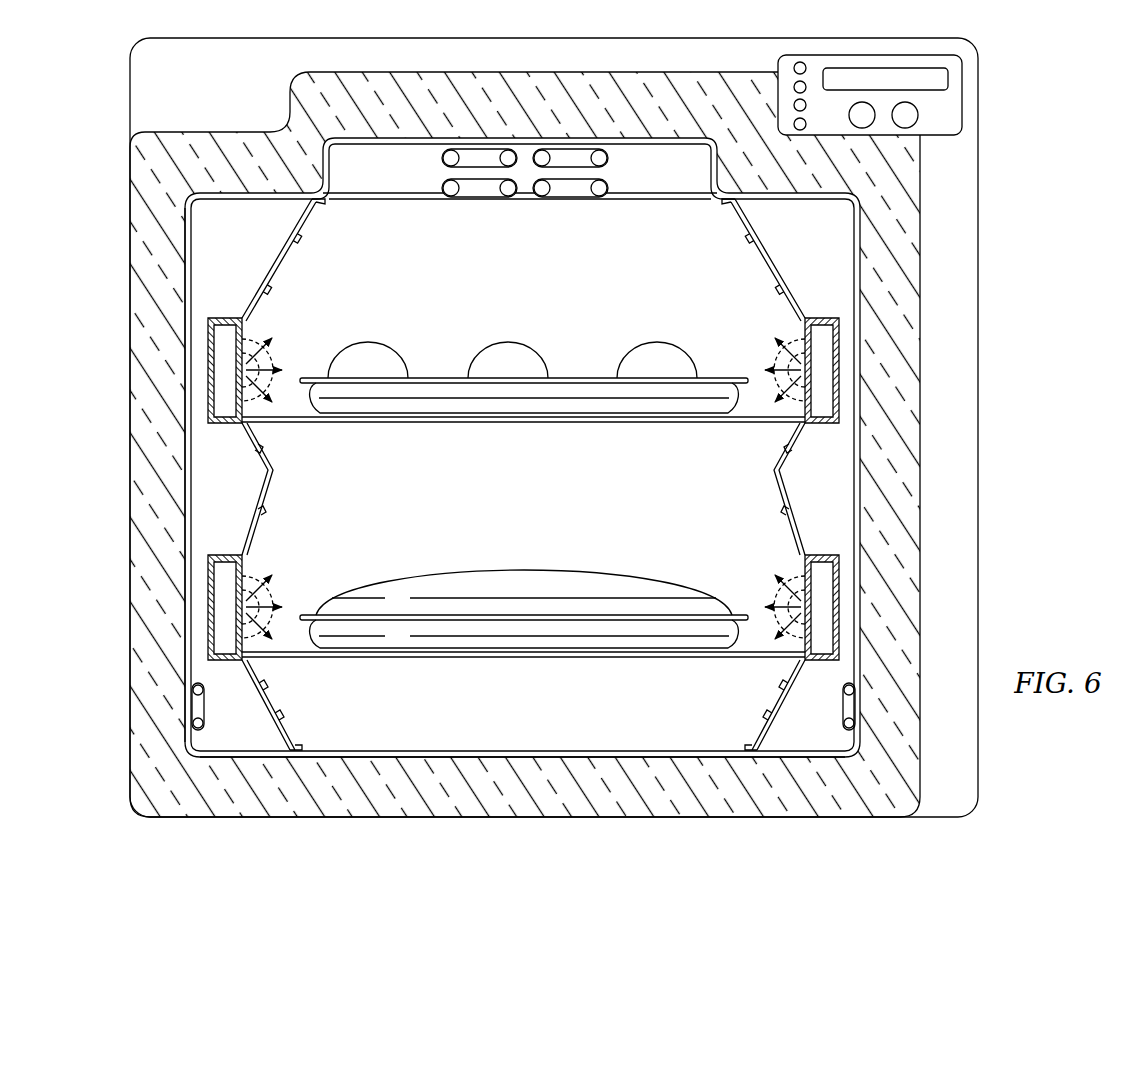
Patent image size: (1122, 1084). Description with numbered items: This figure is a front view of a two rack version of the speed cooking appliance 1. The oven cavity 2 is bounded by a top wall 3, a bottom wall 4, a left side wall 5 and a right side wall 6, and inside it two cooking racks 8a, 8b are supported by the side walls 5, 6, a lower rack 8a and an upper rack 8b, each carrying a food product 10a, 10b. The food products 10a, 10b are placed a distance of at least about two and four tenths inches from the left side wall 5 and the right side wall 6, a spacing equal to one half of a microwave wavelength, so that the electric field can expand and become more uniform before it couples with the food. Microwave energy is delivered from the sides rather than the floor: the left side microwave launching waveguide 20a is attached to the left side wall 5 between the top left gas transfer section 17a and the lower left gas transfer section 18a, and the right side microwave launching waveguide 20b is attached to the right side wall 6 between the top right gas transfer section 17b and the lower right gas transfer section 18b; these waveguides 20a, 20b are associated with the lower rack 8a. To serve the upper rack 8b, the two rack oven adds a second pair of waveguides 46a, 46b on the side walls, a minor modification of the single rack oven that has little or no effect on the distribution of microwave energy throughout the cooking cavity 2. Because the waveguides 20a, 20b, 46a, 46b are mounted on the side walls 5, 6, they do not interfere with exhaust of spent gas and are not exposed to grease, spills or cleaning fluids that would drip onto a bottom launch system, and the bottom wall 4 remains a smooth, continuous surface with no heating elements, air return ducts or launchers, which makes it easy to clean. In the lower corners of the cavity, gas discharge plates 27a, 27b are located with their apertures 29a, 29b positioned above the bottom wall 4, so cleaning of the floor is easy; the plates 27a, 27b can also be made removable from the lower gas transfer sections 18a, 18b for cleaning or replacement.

The appliance 1 is at (978, 225).
The oven cavity 2 is at (426, 716).
The top wall 3 is at (233, 190).
The bottom wall 4 is at (558, 752).
The left side wall 5 is at (175, 437).
The right side wall 6 is at (873, 295).
The cooking rack 8a is at (511, 657).
The cooking rack 8b is at (521, 422).
The food product 10a is at (508, 343).
The food product 10b is at (506, 582).
The top left gas transfer section 17a is at (216, 254).
The top right gas transfer section 17b is at (801, 254).
The lower left gas transfer section 18a is at (221, 738).
The lower right gas transfer section 18b is at (792, 738).
The left side microwave launching waveguide 20a is at (225, 597).
The right side microwave launching waveguide 20b is at (820, 603).
The gas discharge plate 27a is at (283, 715).
The gas discharge plate 27b is at (764, 715).
The apertures 29a is at (270, 685).
The apertures 29b is at (777, 683).
The waveguide 46a is at (225, 352).
The waveguide 46b is at (820, 403).